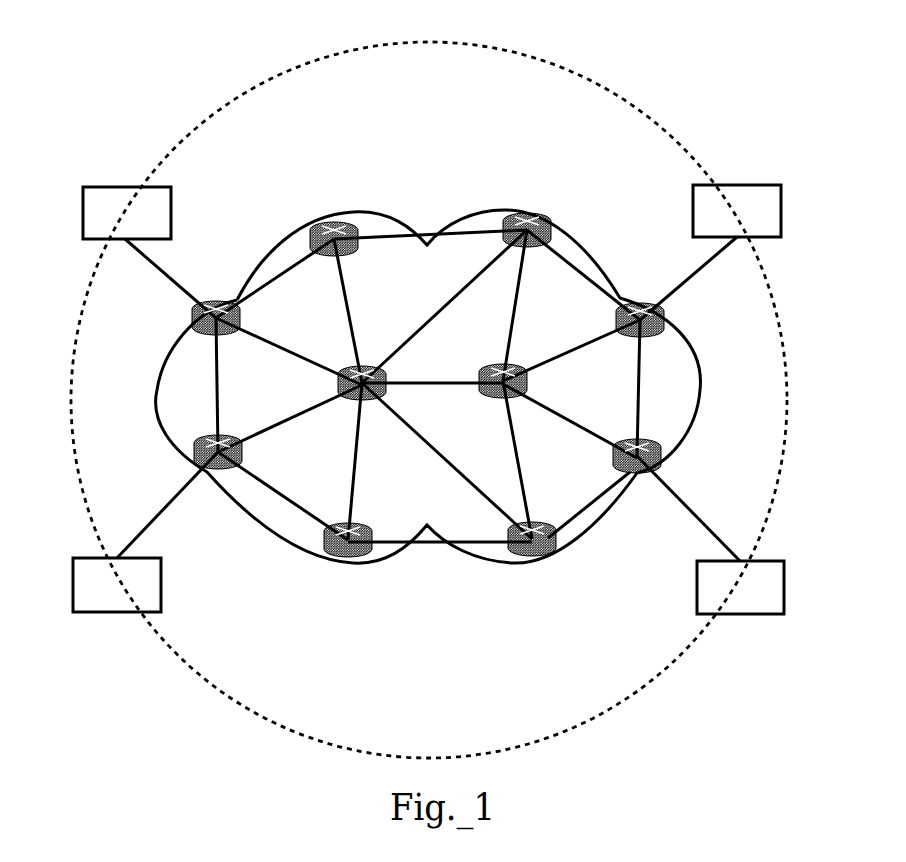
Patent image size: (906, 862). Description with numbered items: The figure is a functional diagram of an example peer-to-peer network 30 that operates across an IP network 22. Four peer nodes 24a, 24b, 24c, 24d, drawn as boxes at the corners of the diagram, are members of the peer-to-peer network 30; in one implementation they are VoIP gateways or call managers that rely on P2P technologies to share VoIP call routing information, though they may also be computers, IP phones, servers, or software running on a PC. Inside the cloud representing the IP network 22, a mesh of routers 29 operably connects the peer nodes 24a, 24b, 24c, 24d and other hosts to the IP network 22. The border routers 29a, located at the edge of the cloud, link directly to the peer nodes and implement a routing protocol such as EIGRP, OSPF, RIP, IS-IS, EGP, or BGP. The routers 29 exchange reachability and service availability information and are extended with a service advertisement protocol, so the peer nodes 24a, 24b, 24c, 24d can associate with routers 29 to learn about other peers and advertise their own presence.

The peer-to-peer network 30 is at (270, 81).
The IP network 22 is at (708, 386).
The peer node 24a is at (135, 187).
The peer node 24b is at (738, 185).
The peer node 24c is at (117, 612).
The peer node 24d is at (740, 614).
The router 29 is at (333, 228).
The border router 29a is at (192, 321).